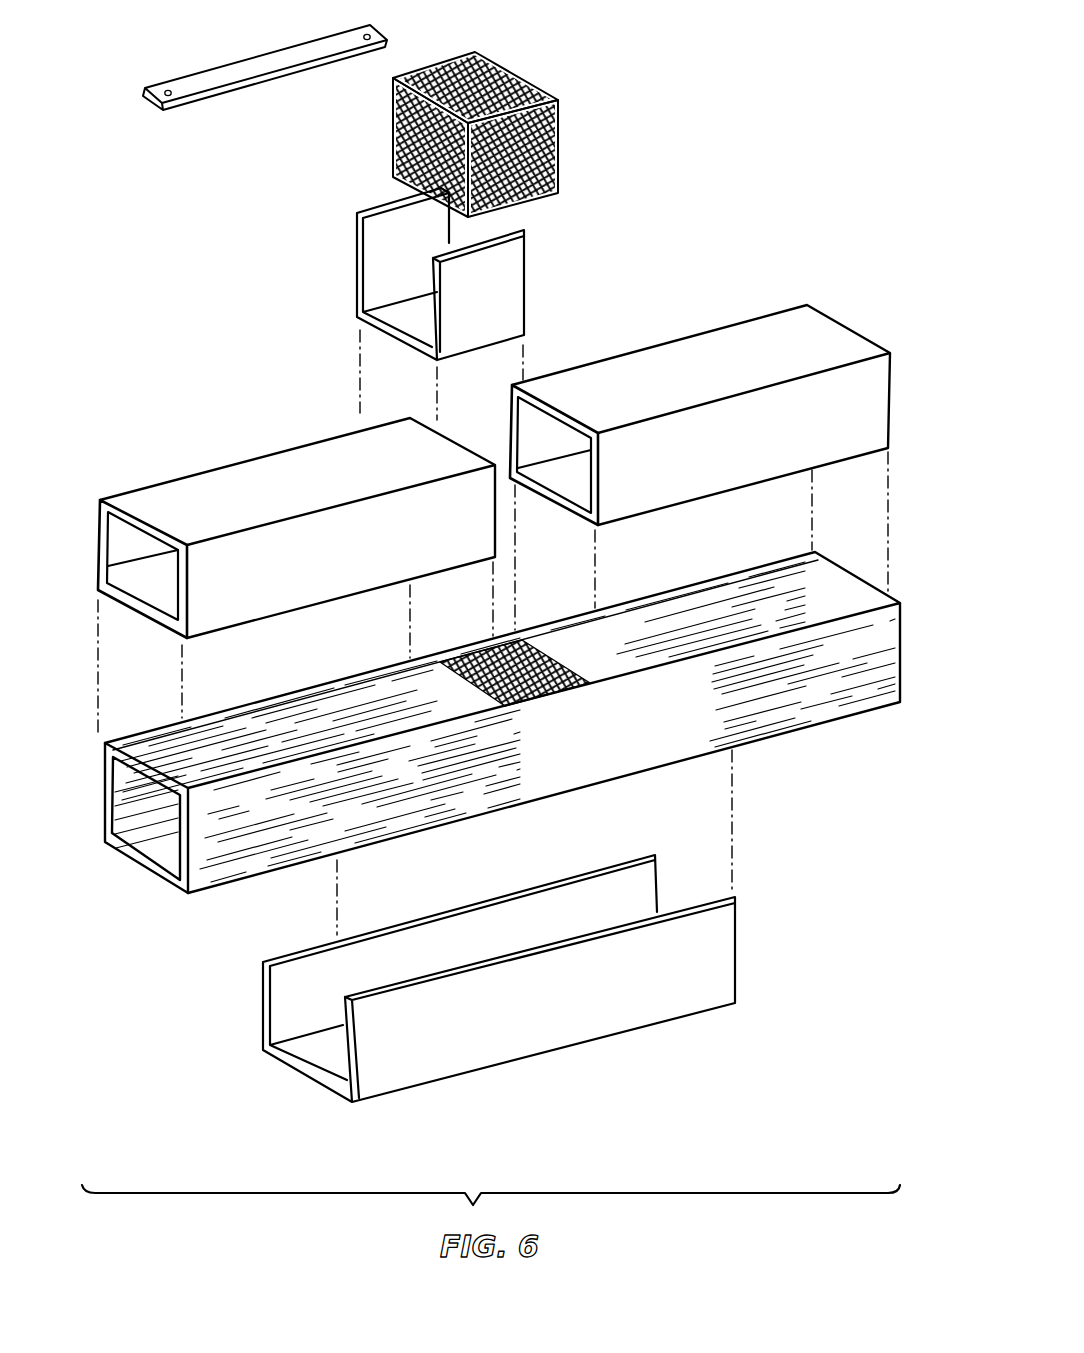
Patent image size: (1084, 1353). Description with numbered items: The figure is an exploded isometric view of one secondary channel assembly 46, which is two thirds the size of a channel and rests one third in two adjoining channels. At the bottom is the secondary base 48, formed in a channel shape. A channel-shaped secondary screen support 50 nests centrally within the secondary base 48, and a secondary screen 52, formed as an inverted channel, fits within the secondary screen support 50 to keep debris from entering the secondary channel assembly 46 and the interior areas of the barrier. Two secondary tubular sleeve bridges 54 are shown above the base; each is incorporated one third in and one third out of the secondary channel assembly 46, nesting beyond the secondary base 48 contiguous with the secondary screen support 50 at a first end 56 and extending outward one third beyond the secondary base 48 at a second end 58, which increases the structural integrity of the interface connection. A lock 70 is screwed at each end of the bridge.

The secondary channel assembly 46 is at (502, 803).
The secondary base 48 is at (627, 1037).
The secondary screen support 50 is at (357, 263).
The secondary screen 52 is at (558, 138).
The secondary tubular sleeve bridge 54 is at (488, 435).
The first end 56 is at (447, 433).
The second end 58 is at (100, 500).
The lock 70 is at (187, 78).